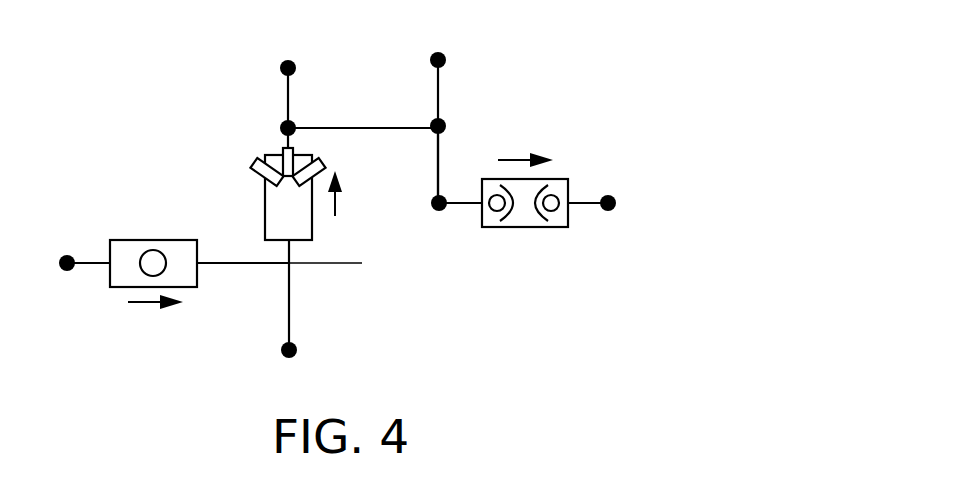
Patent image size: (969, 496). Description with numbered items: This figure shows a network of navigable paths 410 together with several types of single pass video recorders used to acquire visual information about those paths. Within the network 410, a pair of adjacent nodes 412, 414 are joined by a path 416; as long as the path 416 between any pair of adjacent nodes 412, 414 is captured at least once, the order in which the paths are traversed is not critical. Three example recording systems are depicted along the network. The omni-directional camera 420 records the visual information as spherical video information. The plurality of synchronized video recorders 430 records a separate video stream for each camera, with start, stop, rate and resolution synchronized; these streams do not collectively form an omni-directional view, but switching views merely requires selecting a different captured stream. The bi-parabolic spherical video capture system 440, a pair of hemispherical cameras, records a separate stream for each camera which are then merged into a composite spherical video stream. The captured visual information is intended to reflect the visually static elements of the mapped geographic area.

The network of navigable paths 410 is at (258, 93).
The node 412 is at (438, 210).
The node 414 is at (443, 117).
The path 416 is at (437, 163).
The omni-directional camera 420 is at (130, 240).
The plurality of synchronized video recorders 430 is at (263, 196).
The bi-parabolic spherical video capture system 440 is at (512, 228).